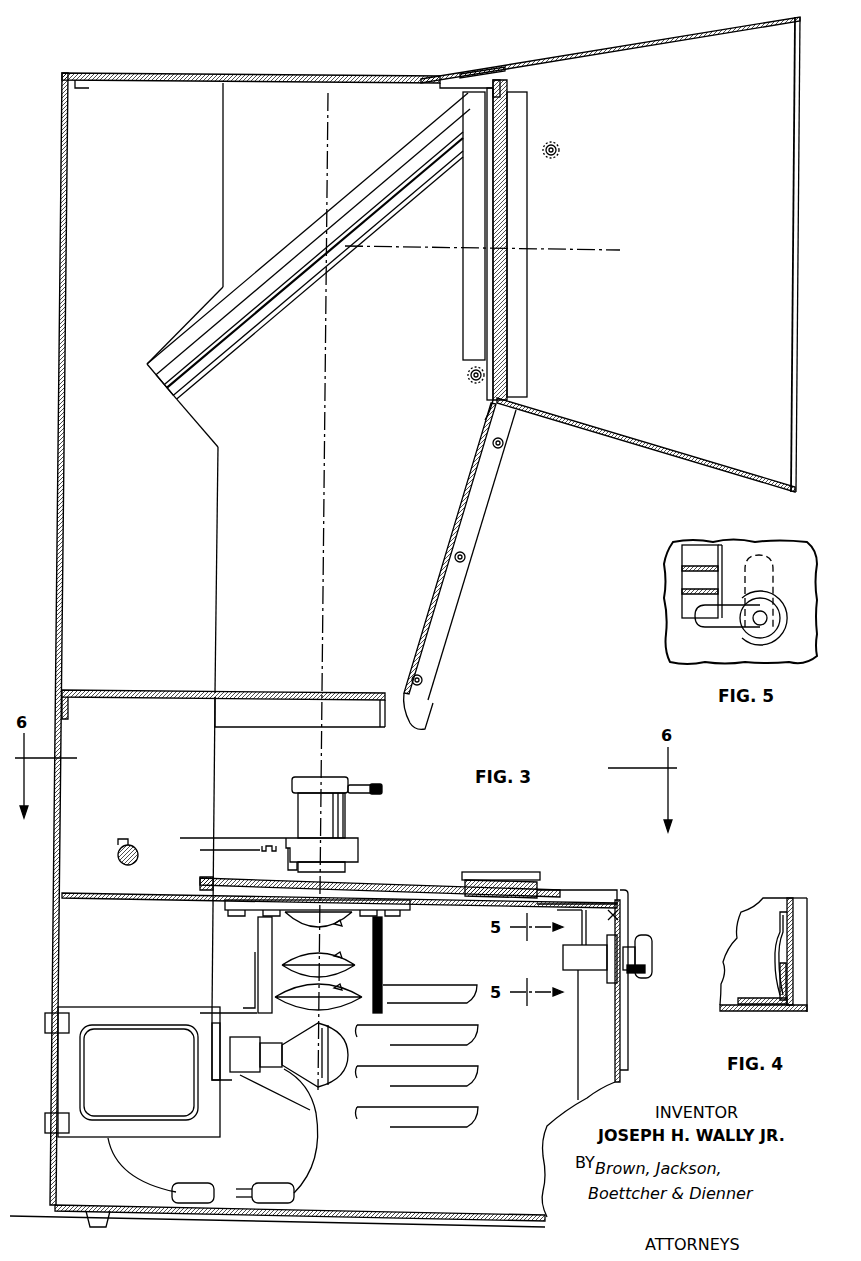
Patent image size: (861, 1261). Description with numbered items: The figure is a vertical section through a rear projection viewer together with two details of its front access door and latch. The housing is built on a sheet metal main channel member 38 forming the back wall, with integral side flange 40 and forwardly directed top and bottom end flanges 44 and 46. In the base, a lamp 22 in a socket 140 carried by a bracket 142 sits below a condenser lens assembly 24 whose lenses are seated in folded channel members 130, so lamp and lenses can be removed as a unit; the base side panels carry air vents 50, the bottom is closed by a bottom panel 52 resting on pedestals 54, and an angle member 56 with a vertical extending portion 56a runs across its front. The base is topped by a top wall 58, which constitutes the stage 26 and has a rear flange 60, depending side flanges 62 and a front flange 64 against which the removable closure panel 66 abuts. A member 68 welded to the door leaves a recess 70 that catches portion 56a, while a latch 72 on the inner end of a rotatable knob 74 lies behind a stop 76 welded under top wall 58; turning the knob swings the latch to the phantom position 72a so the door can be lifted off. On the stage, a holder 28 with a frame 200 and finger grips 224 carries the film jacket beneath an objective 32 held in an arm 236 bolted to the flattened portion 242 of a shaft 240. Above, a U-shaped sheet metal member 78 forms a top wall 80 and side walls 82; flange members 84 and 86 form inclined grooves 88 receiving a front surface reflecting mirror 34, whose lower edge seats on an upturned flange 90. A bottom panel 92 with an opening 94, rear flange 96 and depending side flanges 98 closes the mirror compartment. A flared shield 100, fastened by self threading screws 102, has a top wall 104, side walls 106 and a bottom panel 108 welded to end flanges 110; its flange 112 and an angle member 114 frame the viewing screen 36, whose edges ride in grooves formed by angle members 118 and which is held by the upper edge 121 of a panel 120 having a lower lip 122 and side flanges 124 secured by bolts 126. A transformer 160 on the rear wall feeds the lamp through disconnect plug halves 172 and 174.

In FIG. 3, the lamp 22 is at (310, 1092).
In FIG. 3, the condenser lens assembly 24 is at (321, 963).
In FIG. 3, the stage 26 is at (570, 894).
In FIG. 3, the holder 28 is at (442, 874).
In FIG. 3, the objective 32 is at (348, 817).
In FIG. 3, the front surface reflecting mirror 34 is at (235, 354).
In FIG. 3, the viewing screen 36 is at (510, 149).
In FIG. 3, the main channel member 38 is at (50, 838).
In FIG. 3, the side flange 40 is at (146, 558).
In FIG. 3, the top end flange 44 is at (90, 90).
In FIG. 3, the bottom end flange 46 is at (76, 1196).
In FIG. 3, the air vents 50 is at (475, 1074).
In FIG. 3, the bottom panel 52 is at (436, 1212).
In FIG. 4, the bottom panel 52 is at (770, 1012).
In FIG. 3, the pedestal 54 is at (68, 1218).
In FIG. 4, the angle member 56 is at (747, 1012).
In FIG. 4, the vertical extending portion 56a is at (780, 982).
In FIG. 3, the top wall 58 is at (162, 902).
In FIG. 3, the rear flange 60 is at (66, 924).
In FIG. 3, the depending side flange 62 is at (206, 932).
In FIG. 3, the front flange 64 is at (620, 917).
In FIG. 3, the closure panel 66 is at (620, 1009).
In FIG. 4, the closure panel 66 is at (793, 918).
In FIG. 5, the closure panel 66 is at (798, 552).
In FIG. 4, the member 68 is at (780, 955).
In FIG. 4, the recess 70 is at (782, 965).
In FIG. 5, the latch 72 is at (711, 623).
In FIG. 5, the phantom line position of latch 72a is at (767, 535).
In FIG. 3, the rotatable knob 74 is at (652, 952).
In FIG. 5, the rotatable knob 74 is at (779, 654).
In FIG. 3, the stop 76 is at (570, 936).
In FIG. 5, the stop 76 is at (685, 561).
In FIG. 3, the sheet metal member 78 is at (151, 70).
In FIG. 3, the top wall 80 is at (233, 75).
In FIG. 3, the side walls 82 is at (294, 81).
In FIG. 3, the flange member 84 is at (364, 218).
In FIG. 3, the flange member 86 is at (338, 212).
In FIG. 3, the inclined parallel grooves 88 is at (392, 190).
In FIG. 3, the upturned flange 90 is at (158, 396).
In FIG. 3, the bottom panel 92 is at (134, 691).
In FIG. 3, the opening 94 is at (342, 696).
In FIG. 3, the rear flange 96 is at (70, 713).
In FIG. 3, the depending side flanges 98 is at (256, 728).
In FIG. 3, the shield 100 is at (626, 44).
In FIG. 3, the self threading screws 102 is at (458, 162).
In FIG. 3, the top wall 104 is at (551, 54).
In FIG. 3, the side walls 106 is at (796, 254).
In FIG. 3, the bottom panel 108 is at (646, 445).
In FIG. 3, the end flanges 110 is at (636, 444).
In FIG. 3, the flange 112 is at (505, 378).
In FIG. 3, the angle member 114 is at (502, 86).
In FIG. 3, the vertically extending angle members 118 is at (462, 292).
In FIG. 3, the panel 120 is at (462, 496).
In FIG. 3, the upper edge 121 is at (484, 394).
In FIG. 3, the lower lip 122 is at (391, 732).
In FIG. 3, the side flanges 124 is at (448, 621).
In FIG. 3, the bolts 126 is at (504, 448).
In FIG. 3, the channel members 130 is at (260, 946).
In FIG. 3, the socket 140 is at (242, 1050).
In FIG. 3, the bracket 142 is at (248, 1004).
In FIG. 3, the transformer 160 is at (151, 1076).
In FIG. 3, the disconnect plug half 172 is at (268, 1176).
In FIG. 3, the disconnect plug half 174 is at (190, 1176).
In FIG. 3, the frame 200 is at (428, 875).
In FIG. 3, the finger grips 224 is at (506, 874).
In FIG. 3, the arm 236 is at (192, 850).
In FIG. 3, the shaft 240 is at (118, 855).
In FIG. 3, the flattened portion 242 is at (140, 842).